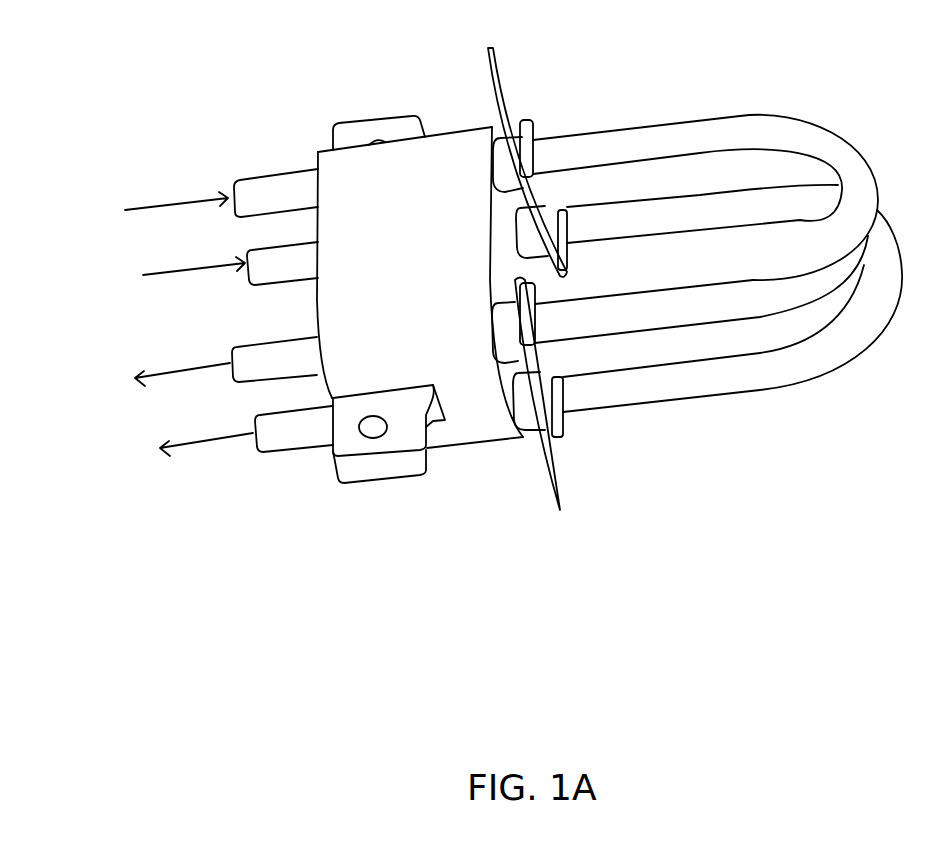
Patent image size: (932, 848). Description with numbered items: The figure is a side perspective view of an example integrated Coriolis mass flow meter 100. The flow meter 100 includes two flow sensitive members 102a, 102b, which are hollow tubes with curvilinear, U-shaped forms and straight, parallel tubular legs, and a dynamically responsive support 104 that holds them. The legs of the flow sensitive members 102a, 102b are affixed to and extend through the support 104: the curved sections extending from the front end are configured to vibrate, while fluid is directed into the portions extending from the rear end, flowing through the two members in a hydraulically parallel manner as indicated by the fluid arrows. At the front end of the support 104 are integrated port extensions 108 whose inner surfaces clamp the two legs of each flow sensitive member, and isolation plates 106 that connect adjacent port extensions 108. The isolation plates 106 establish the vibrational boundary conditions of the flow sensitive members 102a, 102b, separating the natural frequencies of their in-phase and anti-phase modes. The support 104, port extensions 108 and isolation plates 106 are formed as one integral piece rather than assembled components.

The Coriolis mass flow meter 100 is at (86, 26).
The flow sensitive member 102a is at (675, 142).
The flow sensitive member 102b is at (672, 383).
The dynamically responsive support 104 is at (470, 153).
The isolation plate 106 is at (525, 118).
The port extension 108 is at (524, 280).